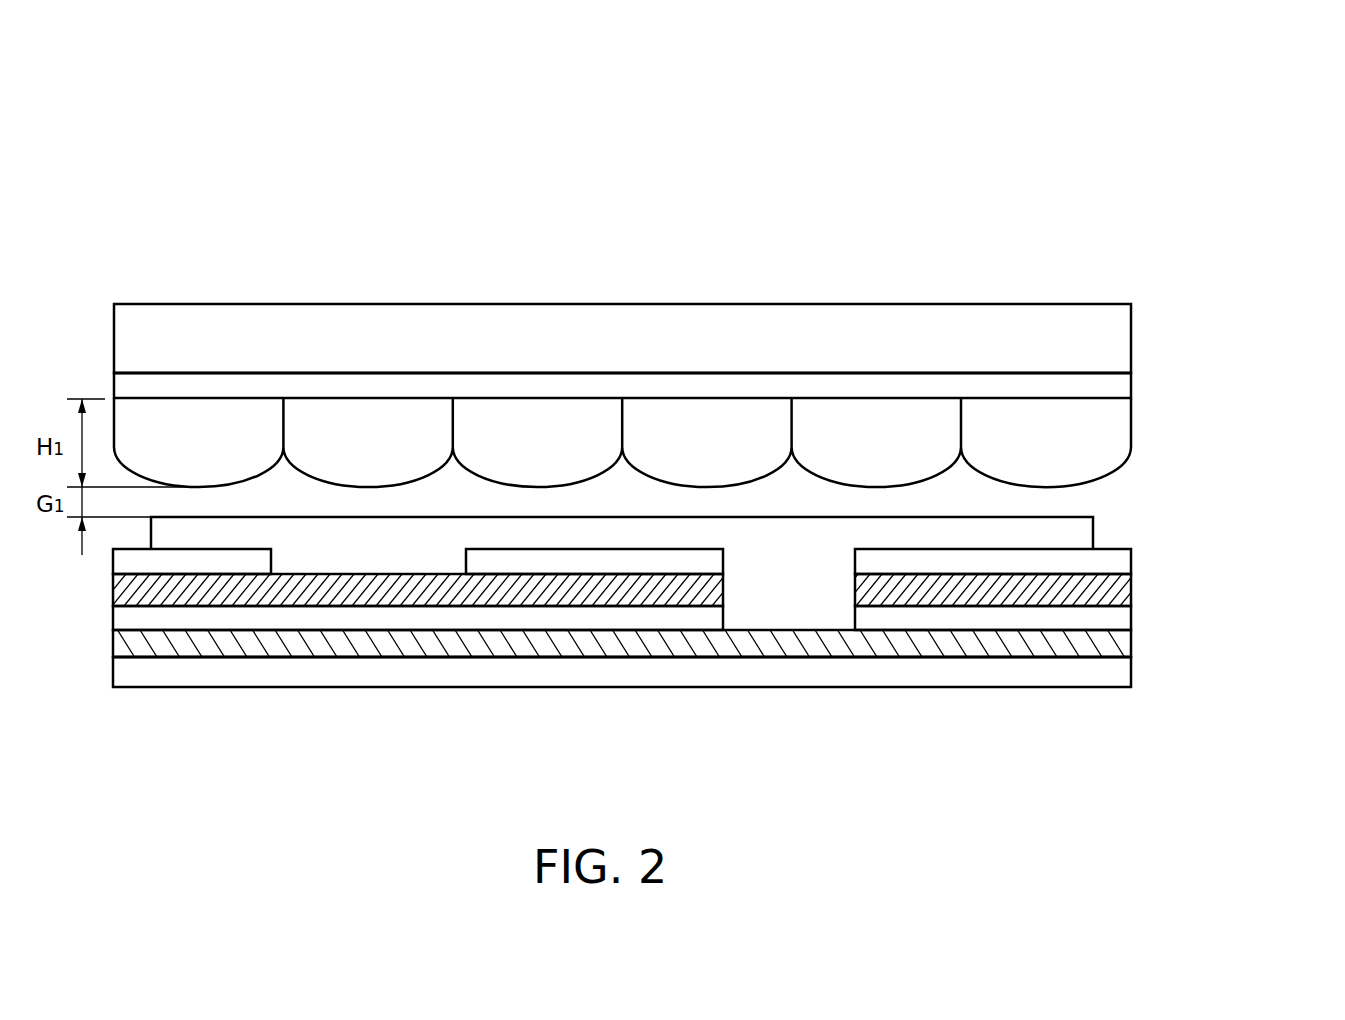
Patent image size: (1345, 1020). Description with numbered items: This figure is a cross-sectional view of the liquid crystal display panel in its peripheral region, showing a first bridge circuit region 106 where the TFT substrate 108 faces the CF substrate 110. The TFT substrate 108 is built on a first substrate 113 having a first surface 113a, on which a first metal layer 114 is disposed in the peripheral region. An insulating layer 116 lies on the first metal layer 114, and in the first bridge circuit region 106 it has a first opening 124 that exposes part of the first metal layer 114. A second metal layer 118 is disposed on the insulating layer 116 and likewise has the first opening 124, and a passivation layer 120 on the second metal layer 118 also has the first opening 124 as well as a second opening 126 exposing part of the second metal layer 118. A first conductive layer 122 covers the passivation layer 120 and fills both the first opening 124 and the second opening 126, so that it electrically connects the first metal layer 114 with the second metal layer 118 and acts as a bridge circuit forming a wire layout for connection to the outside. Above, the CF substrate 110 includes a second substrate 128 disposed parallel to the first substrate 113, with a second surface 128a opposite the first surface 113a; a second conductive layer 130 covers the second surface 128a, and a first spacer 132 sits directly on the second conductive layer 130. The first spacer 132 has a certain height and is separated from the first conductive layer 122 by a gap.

The first bridge circuit region 106 is at (1191, 148).
The TFT substrate 108 is at (689, 486).
The CF substrate 110 is at (712, 393).
The first substrate 113 is at (665, 689).
The first surface 113a is at (1113, 653).
The first metal layer 114 is at (1115, 640).
The insulating layer 116 is at (1118, 624).
The second metal layer 118 is at (1120, 595).
The passivation layer 120 is at (1118, 562).
The first conductive layer 122 is at (1080, 530).
The first opening 124 is at (775, 560).
The second opening 126 is at (373, 560).
The second substrate 128 is at (1118, 323).
The second surface 128a is at (1115, 377).
The second conductive layer 130 is at (1118, 387).
The first spacer 132 is at (665, 442).